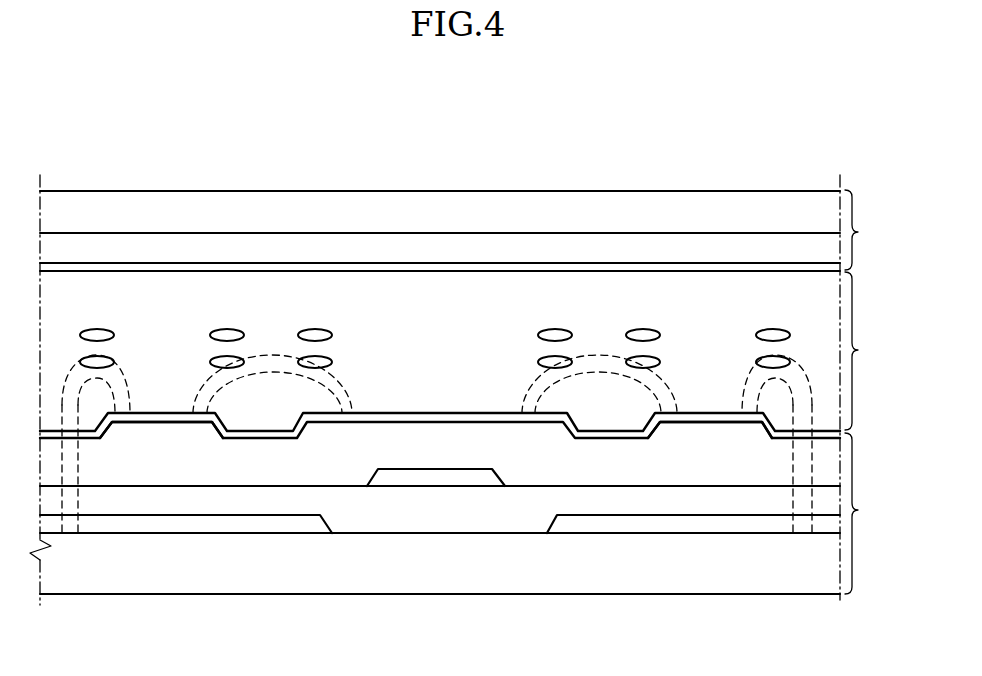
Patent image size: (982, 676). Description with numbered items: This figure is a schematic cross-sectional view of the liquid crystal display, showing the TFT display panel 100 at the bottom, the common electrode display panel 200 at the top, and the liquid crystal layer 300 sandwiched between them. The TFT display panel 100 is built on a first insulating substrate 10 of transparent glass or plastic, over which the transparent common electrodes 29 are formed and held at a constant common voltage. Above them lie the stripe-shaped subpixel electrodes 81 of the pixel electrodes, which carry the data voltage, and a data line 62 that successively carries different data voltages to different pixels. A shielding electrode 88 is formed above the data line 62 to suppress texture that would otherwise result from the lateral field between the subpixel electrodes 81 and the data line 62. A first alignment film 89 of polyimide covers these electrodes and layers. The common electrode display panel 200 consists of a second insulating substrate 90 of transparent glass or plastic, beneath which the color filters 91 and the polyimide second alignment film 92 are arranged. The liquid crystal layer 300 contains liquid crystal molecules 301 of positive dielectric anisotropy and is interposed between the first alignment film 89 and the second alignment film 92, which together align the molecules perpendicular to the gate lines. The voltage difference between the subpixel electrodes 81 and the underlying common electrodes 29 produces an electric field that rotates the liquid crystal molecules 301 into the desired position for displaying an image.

The first insulating substrate 10 is at (100, 582).
The common electrode 29 is at (268, 527).
The data line 62 is at (427, 477).
The subpixel electrode 81 is at (162, 428).
The shielding electrode 88 is at (525, 428).
The first alignment film 89 is at (348, 423).
The second insulating substrate 90 is at (185, 200).
The color filter 91 is at (313, 245).
The second alignment film 92 is at (443, 268).
The TFT display panel 100 is at (876, 513).
The common electrode display panel 200 is at (876, 230).
The liquid crystal layer 300 is at (876, 351).
The liquid crystal molecule 301 is at (646, 333).